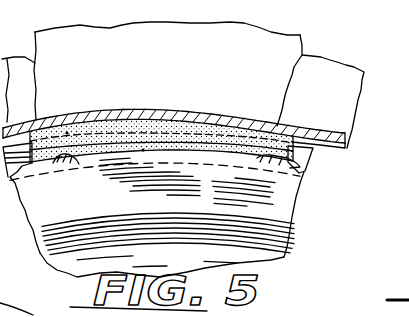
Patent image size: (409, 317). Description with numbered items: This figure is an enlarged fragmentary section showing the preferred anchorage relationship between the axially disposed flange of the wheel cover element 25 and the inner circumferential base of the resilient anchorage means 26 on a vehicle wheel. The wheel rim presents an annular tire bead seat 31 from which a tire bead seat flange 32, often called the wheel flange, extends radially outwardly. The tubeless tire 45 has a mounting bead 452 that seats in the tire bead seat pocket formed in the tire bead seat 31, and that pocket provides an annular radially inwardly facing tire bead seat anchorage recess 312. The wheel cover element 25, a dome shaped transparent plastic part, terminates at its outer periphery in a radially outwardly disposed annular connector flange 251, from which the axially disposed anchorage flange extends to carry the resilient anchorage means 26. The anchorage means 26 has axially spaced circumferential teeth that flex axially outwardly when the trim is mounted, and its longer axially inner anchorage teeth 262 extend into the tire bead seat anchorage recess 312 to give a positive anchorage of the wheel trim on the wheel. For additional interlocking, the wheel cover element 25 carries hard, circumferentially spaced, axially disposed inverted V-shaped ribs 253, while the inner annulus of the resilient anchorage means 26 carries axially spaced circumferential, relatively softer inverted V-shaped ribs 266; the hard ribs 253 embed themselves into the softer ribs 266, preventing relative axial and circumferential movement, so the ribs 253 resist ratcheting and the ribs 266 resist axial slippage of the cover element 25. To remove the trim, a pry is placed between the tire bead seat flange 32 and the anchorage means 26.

The wheel cover element 25 is at (296, 250).
The resilient anchorage means 26 is at (203, 122).
The tire bead seat 31 is at (146, 115).
The tire bead seat flange 32 is at (316, 77).
The tire 45 is at (281, 43).
The connector flange 251 is at (283, 212).
The inverted V-shaped ribs 253 is at (67, 154).
The axially inner anchorage teeth 262 is at (67, 132).
The inverted V-shaped ribs 266 is at (143, 150).
The tire bead seat anchorage recess 312 is at (321, 139).
The mounting bead 452 is at (180, 55).